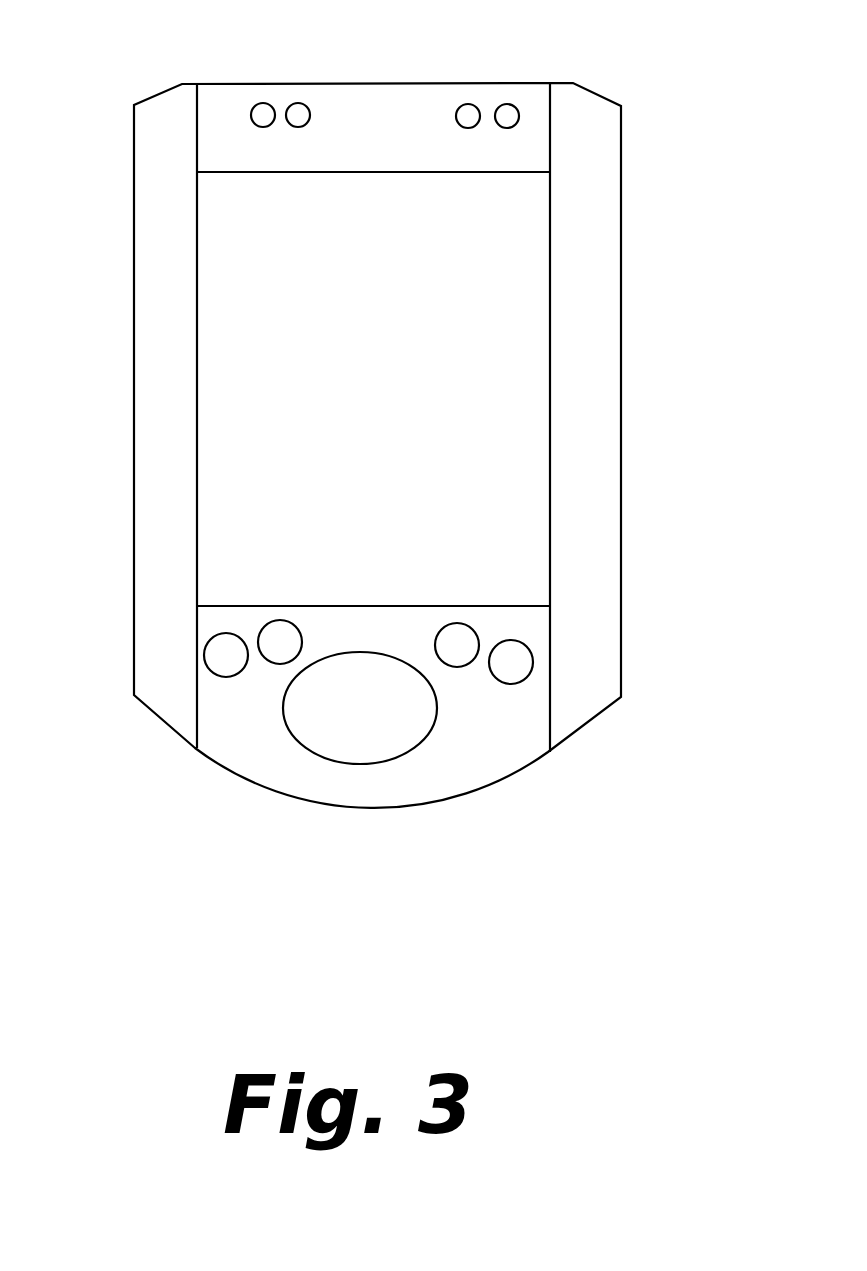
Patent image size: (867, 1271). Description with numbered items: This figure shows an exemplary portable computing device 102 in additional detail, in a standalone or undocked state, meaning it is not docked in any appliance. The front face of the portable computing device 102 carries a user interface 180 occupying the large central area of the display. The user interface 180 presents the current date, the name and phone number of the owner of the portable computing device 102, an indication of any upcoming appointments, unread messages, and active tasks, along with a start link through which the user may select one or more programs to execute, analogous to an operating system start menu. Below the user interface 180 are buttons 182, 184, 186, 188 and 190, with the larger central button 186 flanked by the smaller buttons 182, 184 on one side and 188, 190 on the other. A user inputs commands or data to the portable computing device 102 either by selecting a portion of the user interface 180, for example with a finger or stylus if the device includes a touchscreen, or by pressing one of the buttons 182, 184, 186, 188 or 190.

The portable computing device 102 is at (399, 466).
The user interface 180 is at (515, 245).
The button 182 is at (215, 668).
The button 184 is at (275, 658).
The button 186 is at (403, 750).
The button 188 is at (465, 660).
The button 190 is at (518, 675).